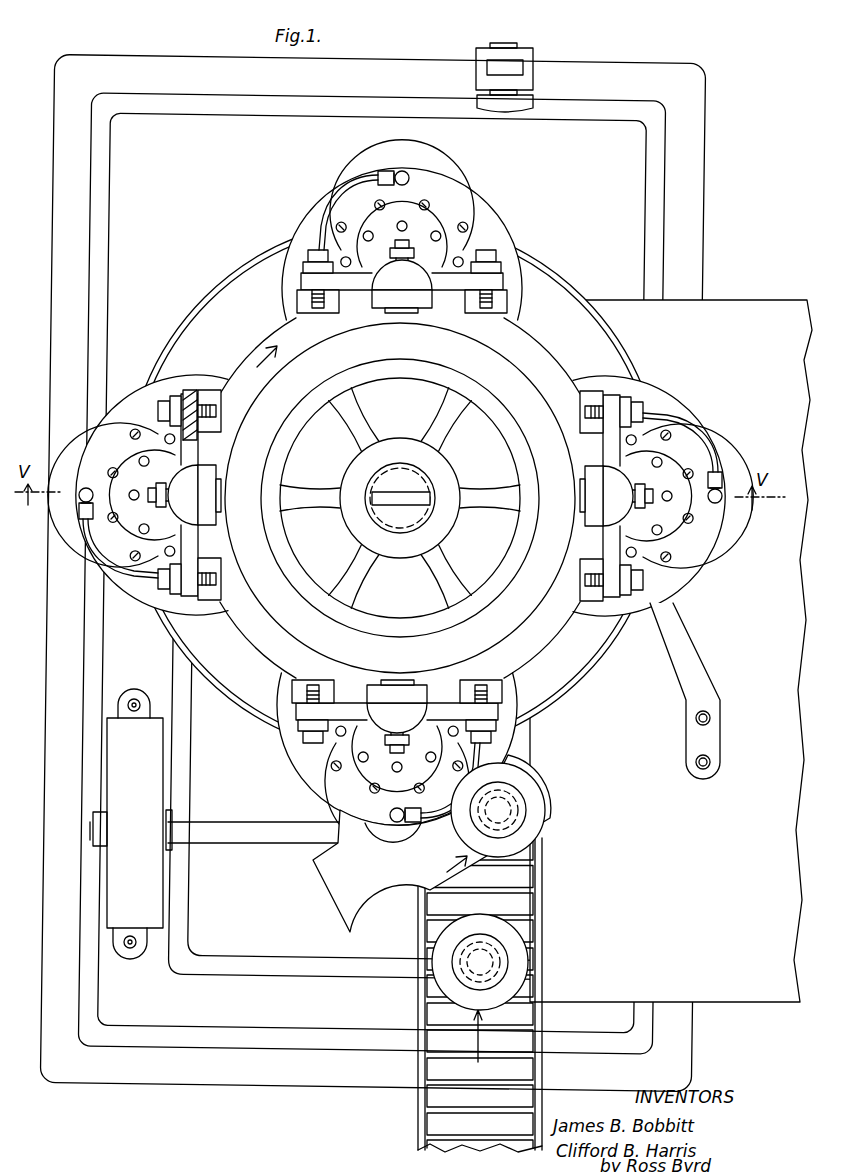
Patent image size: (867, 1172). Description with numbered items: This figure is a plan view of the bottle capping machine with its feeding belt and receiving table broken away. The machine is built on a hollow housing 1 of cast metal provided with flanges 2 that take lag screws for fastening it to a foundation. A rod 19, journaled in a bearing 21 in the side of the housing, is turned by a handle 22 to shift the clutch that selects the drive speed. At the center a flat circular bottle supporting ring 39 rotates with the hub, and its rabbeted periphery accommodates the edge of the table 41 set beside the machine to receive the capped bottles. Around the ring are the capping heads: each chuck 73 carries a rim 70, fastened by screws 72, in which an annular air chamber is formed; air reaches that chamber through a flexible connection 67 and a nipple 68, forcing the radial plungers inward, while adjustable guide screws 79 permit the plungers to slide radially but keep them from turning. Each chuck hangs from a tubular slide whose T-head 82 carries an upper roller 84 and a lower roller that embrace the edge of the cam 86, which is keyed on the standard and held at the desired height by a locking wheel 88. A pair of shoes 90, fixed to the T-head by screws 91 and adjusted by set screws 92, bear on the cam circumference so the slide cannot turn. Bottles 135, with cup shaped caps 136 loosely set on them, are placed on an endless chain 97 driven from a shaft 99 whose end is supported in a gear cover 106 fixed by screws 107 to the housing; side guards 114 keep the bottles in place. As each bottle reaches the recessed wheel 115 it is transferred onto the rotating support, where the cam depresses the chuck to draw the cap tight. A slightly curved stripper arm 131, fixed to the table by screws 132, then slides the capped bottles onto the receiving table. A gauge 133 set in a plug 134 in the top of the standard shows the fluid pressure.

The hollow housing 1 is at (640, 265).
The flanges 2 is at (691, 197).
The rod 19 is at (505, 44).
The bearing 21 is at (530, 100).
The handle 22 is at (515, 70).
The bottle supporting ring 39 is at (394, 487).
The table 41 is at (640, 733).
The flexible connection 67 is at (98, 560).
The nipple 68 is at (403, 170).
The rim 70 is at (445, 180).
The screws 72 is at (424, 205).
The chuck 73 is at (445, 262).
The adjustable guide screws 79 is at (408, 228).
The T-head 82 is at (450, 290).
The upper roller 84 is at (380, 300).
The cam 86 is at (448, 332).
The locking wheel 88 is at (300, 437).
The shoes 90 is at (300, 308).
The screws 91 is at (305, 260).
The set screws 92 is at (178, 395).
The endless chain 97 is at (515, 907).
The shaft 99 is at (252, 840).
The gear cover 106 is at (126, 823).
The screws 107 is at (134, 700).
The side guards 114 is at (550, 963).
The recessed wheel 115 is at (330, 866).
The stripper arm 131 is at (680, 640).
The screws 132 is at (710, 758).
The gauge 133 is at (408, 500).
The plug 134 is at (388, 512).
The bottles 135 is at (545, 820).
The caps 136 is at (526, 802).